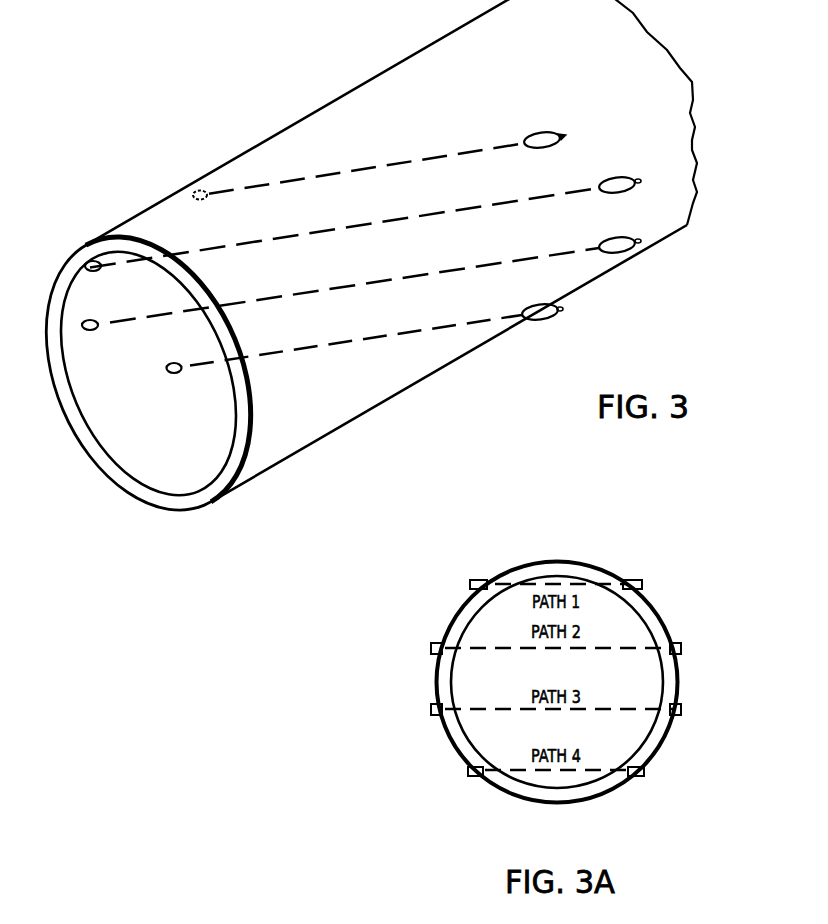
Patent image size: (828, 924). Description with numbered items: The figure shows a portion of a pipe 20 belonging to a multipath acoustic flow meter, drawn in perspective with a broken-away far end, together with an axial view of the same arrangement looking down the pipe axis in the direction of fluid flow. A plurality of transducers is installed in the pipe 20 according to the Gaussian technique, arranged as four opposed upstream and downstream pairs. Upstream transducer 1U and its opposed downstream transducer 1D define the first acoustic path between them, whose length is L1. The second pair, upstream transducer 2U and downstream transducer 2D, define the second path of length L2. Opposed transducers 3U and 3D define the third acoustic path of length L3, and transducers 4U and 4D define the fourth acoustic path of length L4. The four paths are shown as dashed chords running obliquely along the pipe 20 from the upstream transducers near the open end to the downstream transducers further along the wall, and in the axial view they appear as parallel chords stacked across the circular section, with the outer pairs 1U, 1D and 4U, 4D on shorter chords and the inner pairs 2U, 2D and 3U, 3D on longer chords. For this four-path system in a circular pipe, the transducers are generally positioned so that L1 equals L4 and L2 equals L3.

In FIG. 3, the pipe 20 is at (357, 88).
In FIG. 3, the upstream transducer 1U is at (193, 191).
In FIG. 3A, the upstream transducer 1U is at (470, 585).
In FIG. 3, the upstream transducer 2U is at (96, 271).
In FIG. 3A, the upstream transducer 2U is at (431, 648).
In FIG. 3, the upstream transducer 3U is at (93, 330).
In FIG. 3A, the upstream transducer 3U is at (431, 709).
In FIG. 3, the upstream transducer 4U is at (177, 373).
In FIG. 3A, the upstream transducer 4U is at (468, 771).
In FIG. 3, the downstream transducer 1D is at (549, 133).
In FIG. 3A, the downstream transducer 1D is at (642, 585).
In FIG. 3, the downstream transducer 2D is at (619, 178).
In FIG. 3A, the downstream transducer 2D is at (681, 648).
In FIG. 3, the downstream transducer 3D is at (620, 239).
In FIG. 3A, the downstream transducer 3D is at (681, 709).
In FIG. 3, the downstream transducer 4D is at (542, 320).
In FIG. 3A, the downstream transducer 4D is at (644, 771).
In FIG. 3, the acoustic path length L1 is at (409, 160).
In FIG. 3, the acoustic path length L2 is at (411, 215).
In FIG. 3, the acoustic path length L3 is at (414, 276).
In FIG. 3, the acoustic path length L4 is at (414, 331).